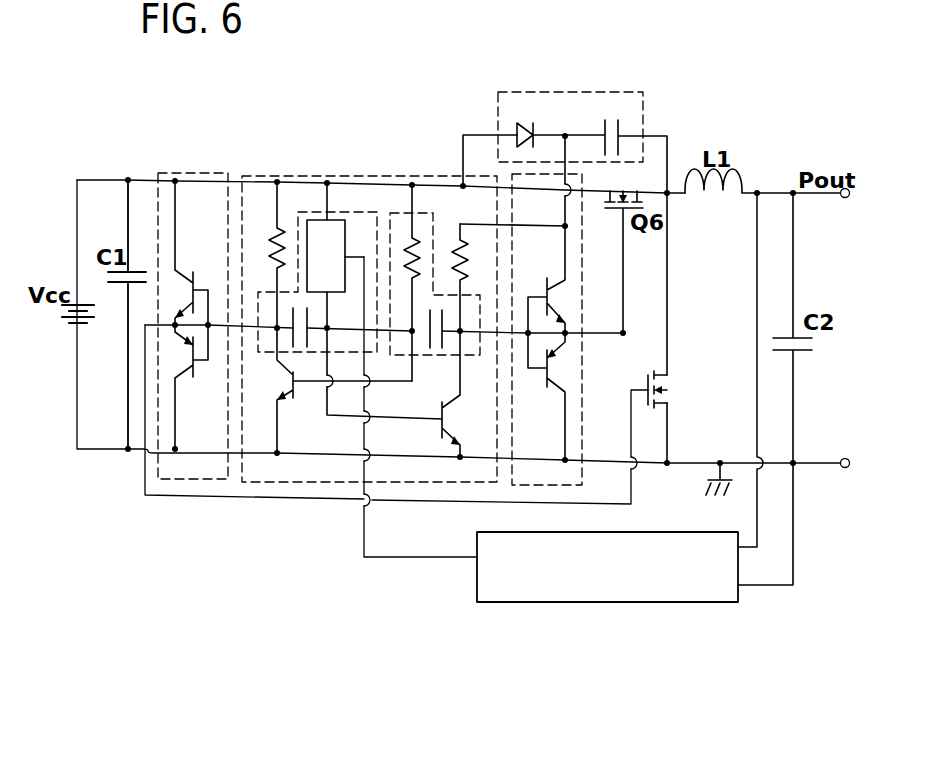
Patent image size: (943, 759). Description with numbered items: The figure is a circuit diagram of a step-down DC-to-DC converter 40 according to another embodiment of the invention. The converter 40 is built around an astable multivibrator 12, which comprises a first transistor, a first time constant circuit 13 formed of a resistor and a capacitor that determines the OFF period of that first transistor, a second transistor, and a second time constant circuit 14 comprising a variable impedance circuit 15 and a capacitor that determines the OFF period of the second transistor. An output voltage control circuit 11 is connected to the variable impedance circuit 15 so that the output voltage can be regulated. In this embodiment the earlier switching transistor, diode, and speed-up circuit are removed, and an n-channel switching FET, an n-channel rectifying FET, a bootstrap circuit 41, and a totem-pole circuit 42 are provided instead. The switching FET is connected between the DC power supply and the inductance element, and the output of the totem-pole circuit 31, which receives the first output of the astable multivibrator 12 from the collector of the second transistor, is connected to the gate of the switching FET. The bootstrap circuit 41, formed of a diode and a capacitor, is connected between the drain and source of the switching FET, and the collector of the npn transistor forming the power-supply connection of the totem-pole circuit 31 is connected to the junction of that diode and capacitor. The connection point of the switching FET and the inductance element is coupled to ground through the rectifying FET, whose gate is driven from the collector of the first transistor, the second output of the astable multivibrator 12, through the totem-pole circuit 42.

The DC-to-DC converter 40 is at (436, 119).
The totem-pole circuit 42 is at (175, 172).
The astable multivibrator 12 is at (256, 175).
The second time constant circuit 14 is at (358, 210).
The variable impedance circuit 15 is at (318, 220).
The first time constant circuit 13 is at (398, 212).
The bootstrap circuit 41 is at (643, 124).
The totem-pole circuit 31 is at (646, 384).
The output voltage control circuit 11 is at (477, 585).